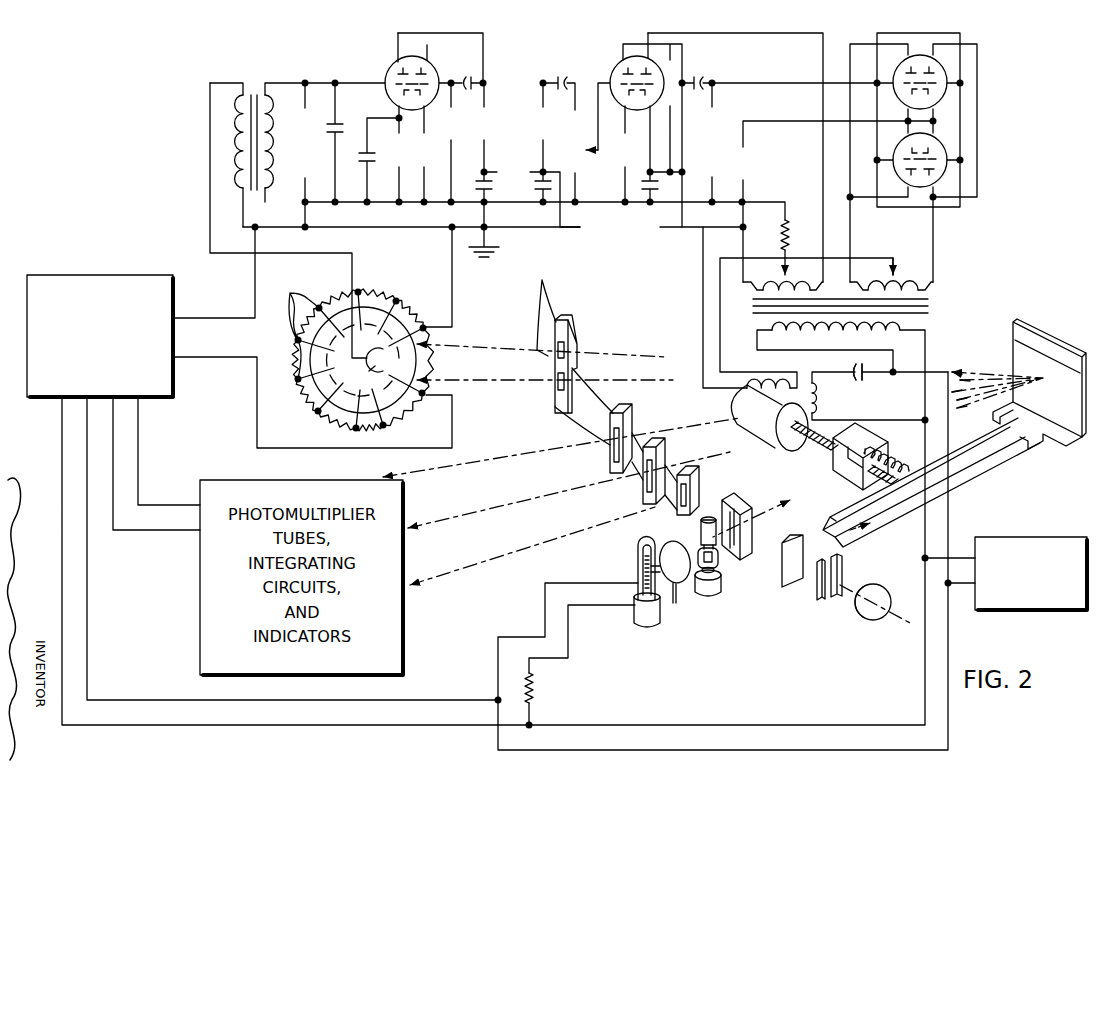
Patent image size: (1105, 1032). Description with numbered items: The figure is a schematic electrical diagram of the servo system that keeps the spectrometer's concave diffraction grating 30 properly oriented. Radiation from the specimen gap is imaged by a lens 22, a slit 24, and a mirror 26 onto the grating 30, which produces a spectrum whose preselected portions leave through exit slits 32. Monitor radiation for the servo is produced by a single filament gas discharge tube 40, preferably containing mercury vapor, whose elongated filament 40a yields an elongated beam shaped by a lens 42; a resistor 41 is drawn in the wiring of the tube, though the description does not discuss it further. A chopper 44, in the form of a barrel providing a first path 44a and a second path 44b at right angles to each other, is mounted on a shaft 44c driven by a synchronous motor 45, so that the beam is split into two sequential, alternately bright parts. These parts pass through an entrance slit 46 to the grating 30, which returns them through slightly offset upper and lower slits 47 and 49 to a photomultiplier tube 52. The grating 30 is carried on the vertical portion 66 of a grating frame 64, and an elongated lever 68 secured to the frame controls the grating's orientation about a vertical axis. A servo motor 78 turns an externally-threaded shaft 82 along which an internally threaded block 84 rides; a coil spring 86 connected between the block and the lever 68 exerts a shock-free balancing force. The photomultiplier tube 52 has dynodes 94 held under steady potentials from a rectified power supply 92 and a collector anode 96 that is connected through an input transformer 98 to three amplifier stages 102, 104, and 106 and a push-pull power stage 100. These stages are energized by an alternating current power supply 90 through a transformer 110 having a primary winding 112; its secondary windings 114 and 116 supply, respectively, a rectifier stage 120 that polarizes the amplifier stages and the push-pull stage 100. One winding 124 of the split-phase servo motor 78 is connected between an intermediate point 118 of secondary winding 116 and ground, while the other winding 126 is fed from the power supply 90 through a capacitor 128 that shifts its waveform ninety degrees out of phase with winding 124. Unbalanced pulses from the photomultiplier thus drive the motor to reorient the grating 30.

The lens 22 is at (905, 567).
The slit 24 is at (831, 600).
The mirror 26 is at (792, 540).
The concave diffraction grating 30 is at (1069, 397).
The exit slits 32 is at (610, 455).
The single filament gas discharge tube 40 is at (640, 545).
The elongated filament 40a is at (639, 570).
The resistor 41 is at (536, 683).
The lens 42 is at (676, 603).
The chopper 44 is at (700, 530).
The first path 44a is at (714, 518).
The second path 44b is at (718, 556).
The shaft 44c is at (721, 588).
The synchronous motor 45 is at (710, 596).
The entrance slit 46 is at (752, 543).
The upper slit 47 is at (555, 338).
The lower slit 49 is at (555, 400).
The photomultiplier tube 52 is at (378, 292).
The grating frame 64 is at (1060, 441).
The vertical portion 66 is at (1051, 331).
The elongated lever 68 is at (974, 471).
The servo motor 78 is at (771, 422).
The externally-threaded shaft 82 is at (800, 443).
The internally threaded block 84 is at (838, 462).
The coil spring 86 is at (912, 453).
The alternating current power supply 90 is at (1044, 537).
The rectified power supply 92 is at (132, 280).
The dynodes 94 is at (292, 329).
The collector anode 96 is at (369, 371).
The input transformer 98 is at (252, 86).
The push-pull power stage 100 is at (978, 62).
The amplifier stage 102 is at (387, 70).
The amplifier stage 104 is at (437, 60).
The amplifier stage 106 is at (615, 68).
The transformer 110 is at (935, 302).
The primary winding 112 is at (904, 330).
The secondary winding 114 is at (812, 240).
The secondary winding 116 is at (933, 268).
The intermediate point 118 is at (898, 259).
The rectifier stage 120 is at (673, 60).
The winding 124 is at (768, 388).
The winding 126 is at (823, 388).
The capacitor 128 is at (858, 380).